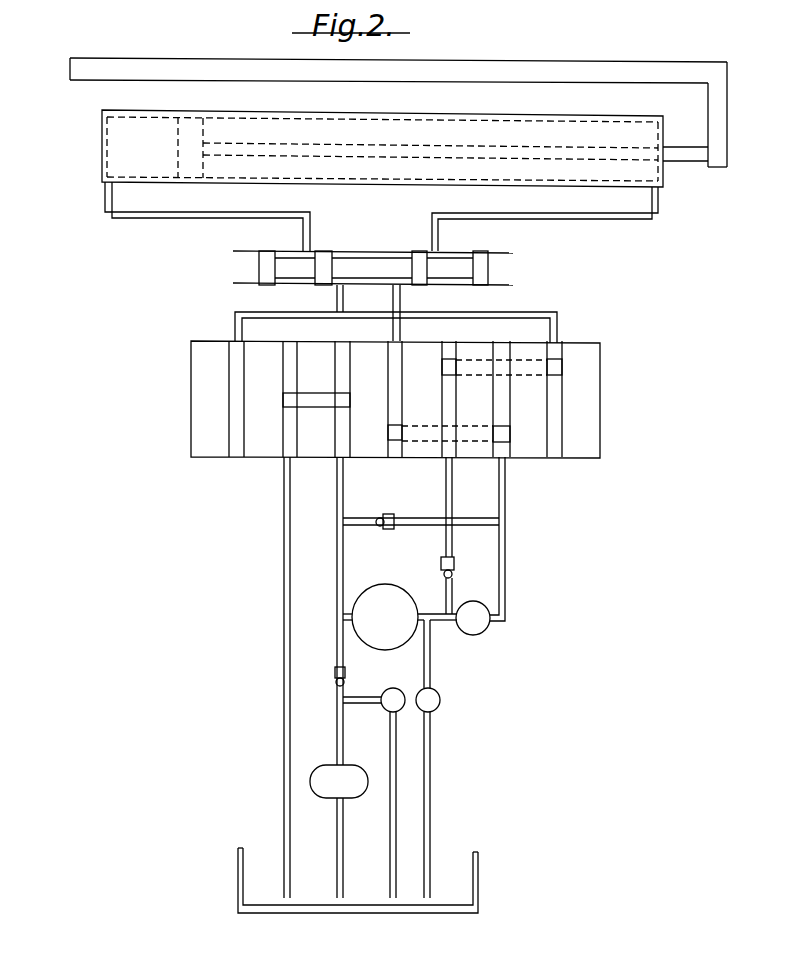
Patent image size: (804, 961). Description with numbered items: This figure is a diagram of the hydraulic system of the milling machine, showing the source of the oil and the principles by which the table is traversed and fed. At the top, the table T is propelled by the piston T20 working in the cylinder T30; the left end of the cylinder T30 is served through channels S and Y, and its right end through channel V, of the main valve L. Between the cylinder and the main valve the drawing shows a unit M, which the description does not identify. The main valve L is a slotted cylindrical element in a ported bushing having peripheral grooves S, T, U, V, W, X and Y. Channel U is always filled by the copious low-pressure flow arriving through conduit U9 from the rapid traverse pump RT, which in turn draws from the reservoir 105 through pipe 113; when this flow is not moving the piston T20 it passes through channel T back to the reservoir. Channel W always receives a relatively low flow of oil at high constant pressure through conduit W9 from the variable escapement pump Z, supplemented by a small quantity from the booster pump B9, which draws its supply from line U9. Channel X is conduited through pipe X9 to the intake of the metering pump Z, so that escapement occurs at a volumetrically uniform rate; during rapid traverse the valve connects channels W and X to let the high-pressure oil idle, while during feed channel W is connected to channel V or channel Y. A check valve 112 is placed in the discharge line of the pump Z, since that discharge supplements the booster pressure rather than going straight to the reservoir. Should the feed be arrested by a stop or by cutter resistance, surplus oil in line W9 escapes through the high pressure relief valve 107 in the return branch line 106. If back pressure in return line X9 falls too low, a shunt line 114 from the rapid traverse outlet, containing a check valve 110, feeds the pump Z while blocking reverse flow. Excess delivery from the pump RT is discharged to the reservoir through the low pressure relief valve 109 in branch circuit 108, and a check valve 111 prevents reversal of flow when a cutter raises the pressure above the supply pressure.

The channel T is at (536, 61).
The piston T20 is at (177, 120).
The cylinder T30 is at (102, 113).
The manifold valve M is at (513, 268).
The main valve L is at (377, 399).
The channel S is at (229, 372).
The channel U is at (335, 372).
The channel V is at (388, 372).
The channel W is at (442, 382).
The channel X is at (493, 398).
The channel Y is at (547, 398).
The conduit U9 is at (337, 552).
The conduit W9 is at (446, 488).
The pipe X9 is at (505, 493).
The booster pump B9 is at (385, 617).
The variable escapement pump Z is at (473, 618).
The rapid traverse pump RT is at (339, 781).
The reservoir 105 is at (478, 880).
The return branch line 106 is at (430, 740).
The high pressure relief valve 107 is at (440, 698).
The branch circuit 108 is at (396, 820).
The low pressure relief valve 109 is at (393, 688).
The check valve 110 is at (386, 514).
The check valve 111 is at (335, 673).
The check valve 112 is at (441, 565).
The pipe 113 is at (337, 856).
The shunt line 114 is at (464, 526).